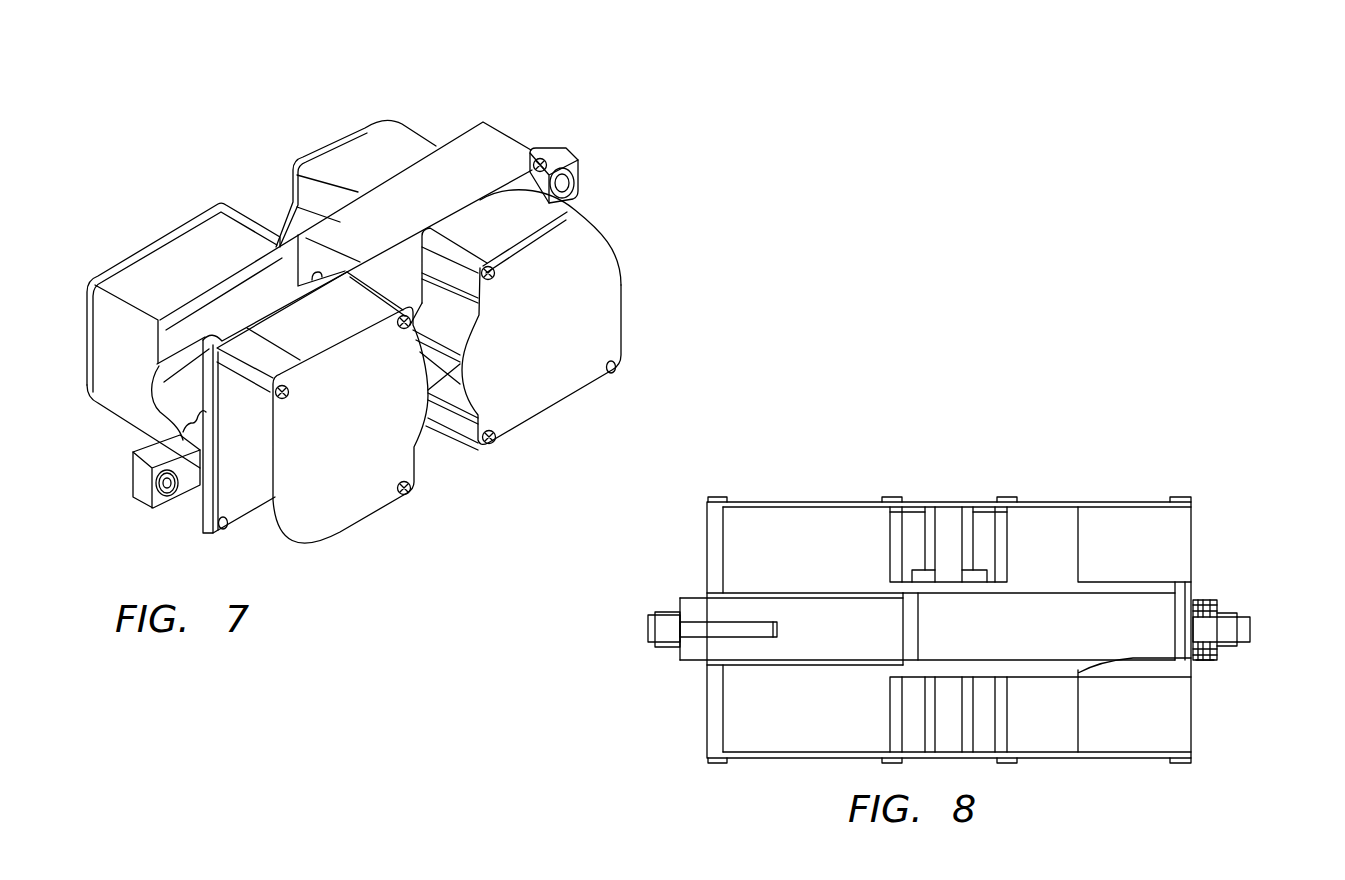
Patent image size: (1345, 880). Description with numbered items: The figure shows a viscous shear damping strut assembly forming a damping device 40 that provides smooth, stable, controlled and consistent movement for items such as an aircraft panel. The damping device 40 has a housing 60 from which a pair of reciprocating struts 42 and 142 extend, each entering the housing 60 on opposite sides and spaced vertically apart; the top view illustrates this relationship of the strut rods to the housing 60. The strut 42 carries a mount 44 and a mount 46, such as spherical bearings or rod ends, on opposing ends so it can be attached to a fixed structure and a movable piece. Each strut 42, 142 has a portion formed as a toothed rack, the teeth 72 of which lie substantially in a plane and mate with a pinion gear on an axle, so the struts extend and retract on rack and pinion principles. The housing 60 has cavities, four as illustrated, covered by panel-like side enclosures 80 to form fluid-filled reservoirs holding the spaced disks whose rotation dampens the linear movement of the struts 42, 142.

In FIG. 7, the damping device 40 is at (512, 132).
In FIG. 8, the damping device 40 is at (1165, 548).
In FIG. 7, the strut 42 is at (132, 480).
In FIG. 8, the strut 42 is at (647, 630).
In FIG. 8, the mount 44 is at (660, 612).
In FIG. 8, the mount 46 is at (1237, 606).
In FIG. 7, the housing 60 is at (215, 250).
In FIG. 8, the housing 60 is at (732, 547).
In FIG. 8, the teeth 72 is at (1208, 661).
In FIG. 7, the side enclosure 80 is at (553, 385).
In FIG. 8, the side enclosure 80 is at (815, 502).
In FIG. 7, the strut 142 is at (582, 173).
In FIG. 8, the strut 142 is at (1252, 630).